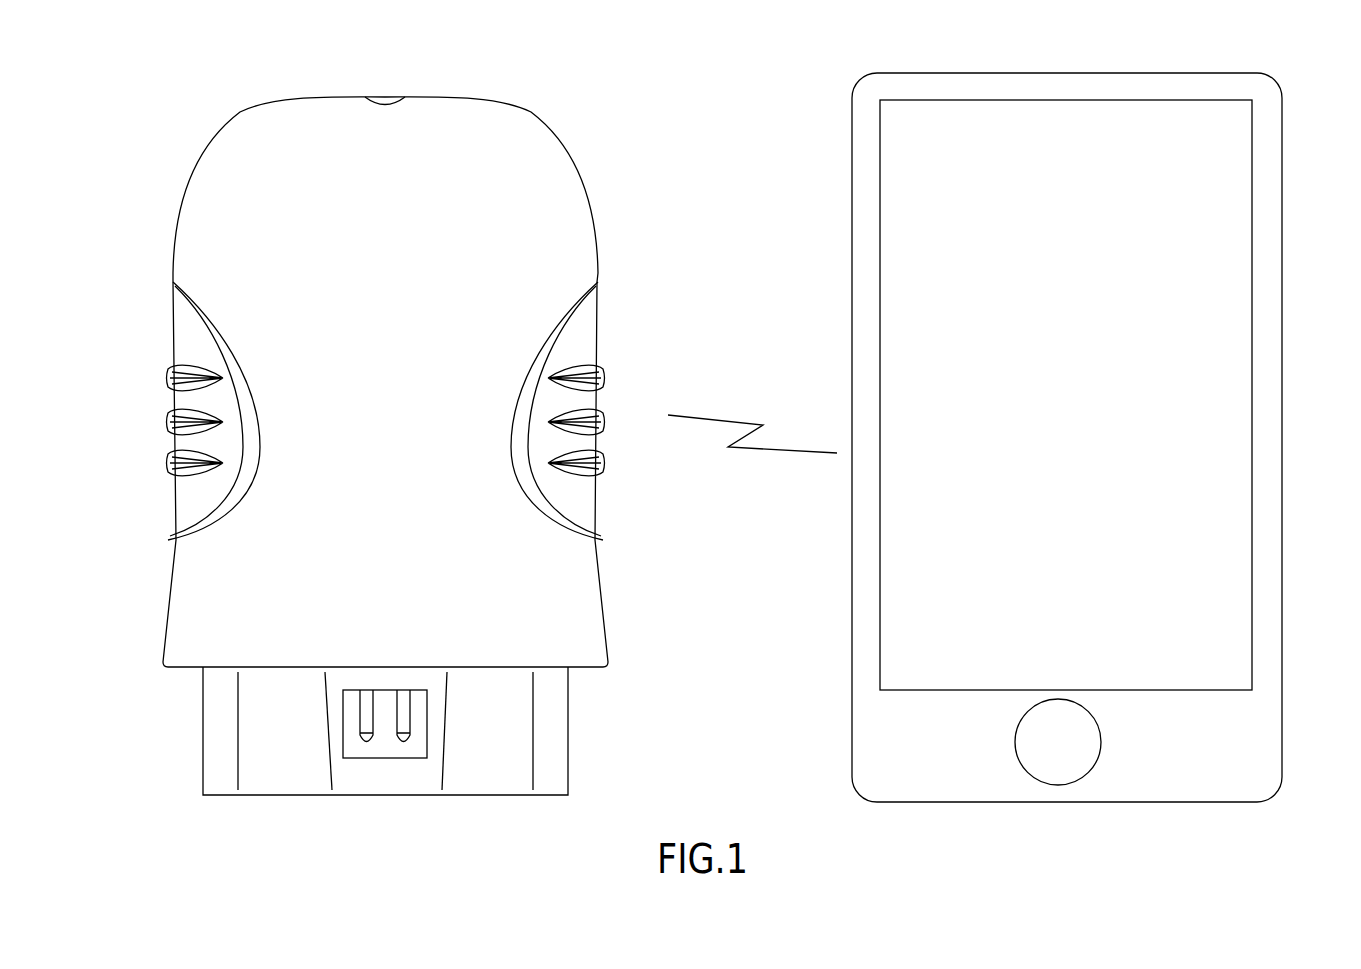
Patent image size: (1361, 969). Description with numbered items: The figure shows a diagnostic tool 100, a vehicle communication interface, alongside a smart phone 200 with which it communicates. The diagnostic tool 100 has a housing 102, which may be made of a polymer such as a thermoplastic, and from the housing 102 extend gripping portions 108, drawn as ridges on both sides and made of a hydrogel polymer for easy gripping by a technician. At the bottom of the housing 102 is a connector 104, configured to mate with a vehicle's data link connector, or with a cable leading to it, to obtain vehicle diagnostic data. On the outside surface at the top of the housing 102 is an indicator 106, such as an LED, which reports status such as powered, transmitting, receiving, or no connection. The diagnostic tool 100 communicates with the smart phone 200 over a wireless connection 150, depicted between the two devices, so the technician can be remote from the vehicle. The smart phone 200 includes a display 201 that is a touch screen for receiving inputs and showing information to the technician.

The diagnostic tool 100 is at (647, 194).
The housing 102 is at (185, 207).
The connector 104 is at (203, 755).
The indicator 106 is at (392, 97).
The gripping portions 108 is at (167, 373).
The wireless connection 150 is at (752, 412).
The smart phone 200 is at (1342, 272).
The display 201 is at (1188, 193).